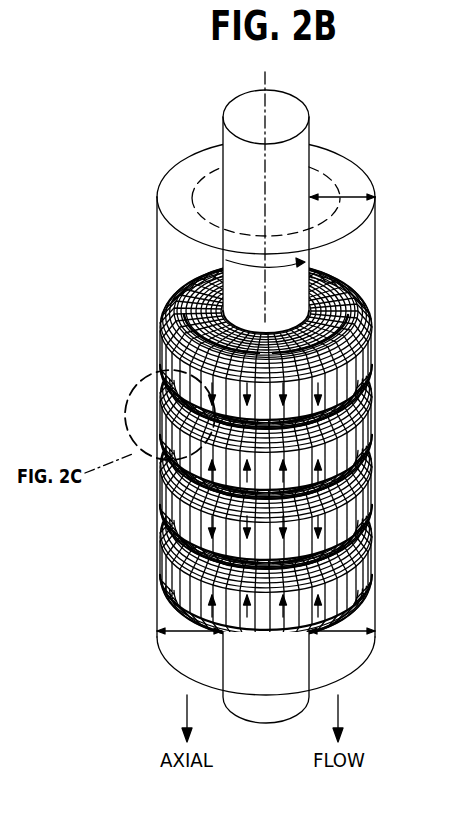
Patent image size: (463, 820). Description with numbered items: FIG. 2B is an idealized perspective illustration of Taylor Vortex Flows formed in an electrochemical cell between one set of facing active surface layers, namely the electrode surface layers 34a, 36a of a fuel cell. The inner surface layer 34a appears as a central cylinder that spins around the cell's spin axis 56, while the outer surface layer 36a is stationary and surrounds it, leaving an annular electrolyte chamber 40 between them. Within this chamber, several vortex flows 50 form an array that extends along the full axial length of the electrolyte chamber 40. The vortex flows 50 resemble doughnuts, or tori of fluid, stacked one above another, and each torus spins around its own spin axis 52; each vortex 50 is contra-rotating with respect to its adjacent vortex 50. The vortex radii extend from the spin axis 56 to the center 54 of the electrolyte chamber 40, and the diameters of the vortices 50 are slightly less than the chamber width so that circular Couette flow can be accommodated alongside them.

The electrode surface layer 34a is at (233, 165).
The electrode surface layer 36a is at (323, 142).
The electrolyte chamber 40 is at (352, 197).
The vortex flows 50 is at (392, 500).
The spin axes 52 is at (157, 557).
The center of electrolyte chamber 54 is at (323, 168).
The spin axis 56 is at (268, 100).